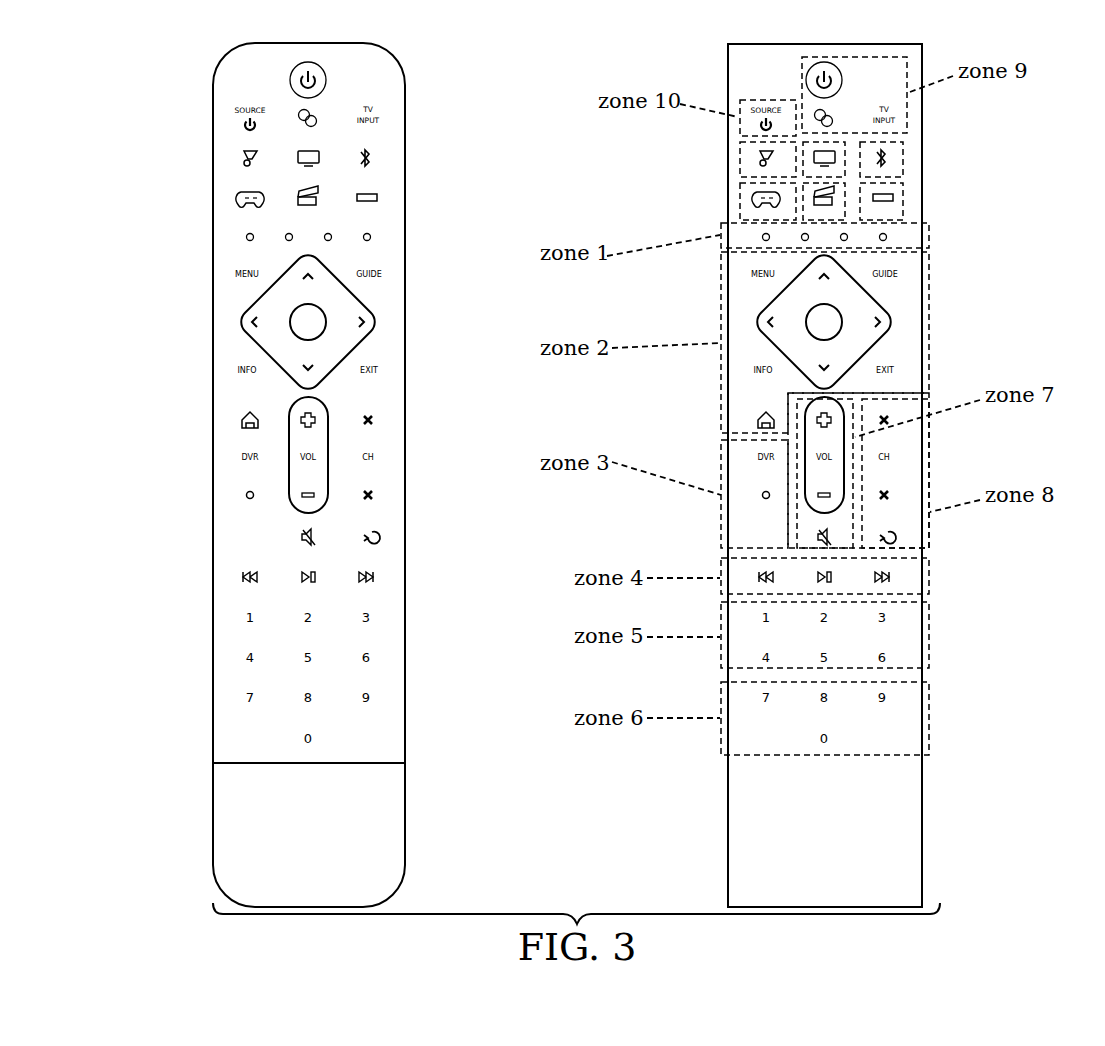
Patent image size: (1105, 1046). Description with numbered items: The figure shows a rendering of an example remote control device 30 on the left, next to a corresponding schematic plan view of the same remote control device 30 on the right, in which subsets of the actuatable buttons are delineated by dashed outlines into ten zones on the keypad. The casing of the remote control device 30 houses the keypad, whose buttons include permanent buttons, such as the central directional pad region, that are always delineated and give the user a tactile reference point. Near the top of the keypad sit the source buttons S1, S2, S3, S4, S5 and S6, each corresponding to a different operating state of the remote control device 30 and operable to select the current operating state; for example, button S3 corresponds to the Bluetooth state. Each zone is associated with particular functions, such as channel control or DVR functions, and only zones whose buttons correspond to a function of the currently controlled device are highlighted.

The remote control device 30 is at (148, 105).
The source button S1 is at (738, 158).
The source button S2 is at (800, 172).
The source button S3 is at (905, 158).
The source button S4 is at (738, 203).
The source button S5 is at (850, 193).
The source button S6 is at (905, 209).